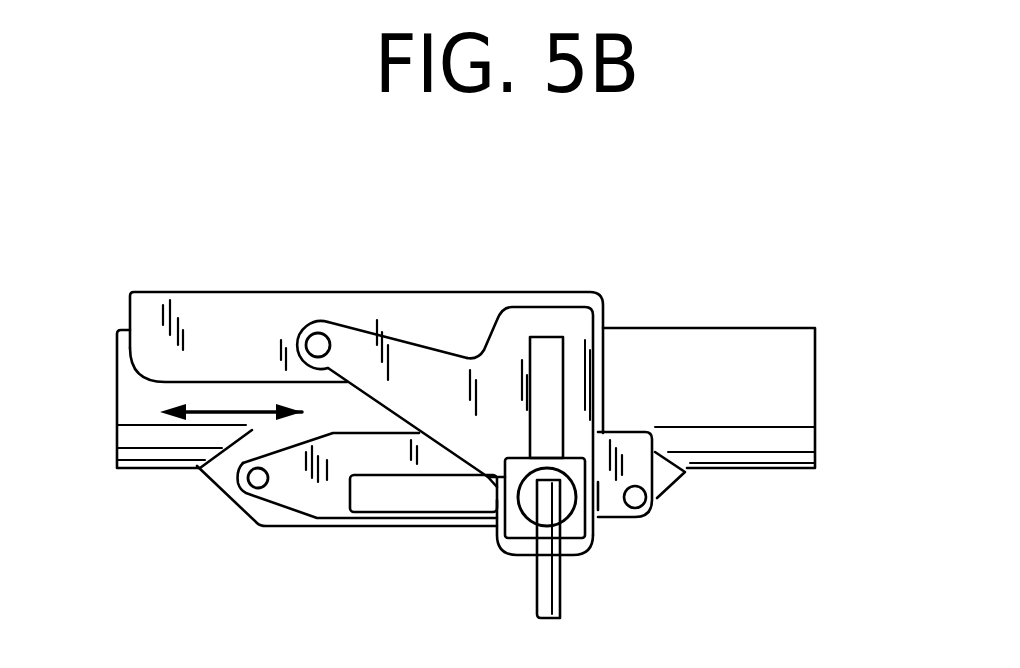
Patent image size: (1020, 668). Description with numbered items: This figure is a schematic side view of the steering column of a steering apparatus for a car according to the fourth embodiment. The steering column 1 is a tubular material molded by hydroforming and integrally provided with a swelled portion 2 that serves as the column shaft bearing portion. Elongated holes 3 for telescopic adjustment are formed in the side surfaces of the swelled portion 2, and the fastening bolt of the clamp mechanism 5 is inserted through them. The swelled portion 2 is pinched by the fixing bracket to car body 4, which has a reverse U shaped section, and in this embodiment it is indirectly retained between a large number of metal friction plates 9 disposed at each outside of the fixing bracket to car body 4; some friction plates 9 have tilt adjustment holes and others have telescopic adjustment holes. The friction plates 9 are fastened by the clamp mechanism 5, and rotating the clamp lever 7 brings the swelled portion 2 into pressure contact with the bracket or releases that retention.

The steering column 1 is at (670, 328).
The swelled portion 2 is at (683, 475).
The elongated holes 3 is at (424, 492).
The fixing bracket to car body 4 is at (328, 291).
The clamp mechanism 5 is at (593, 543).
The clamp lever 7 is at (560, 582).
The friction plates 9 is at (548, 307).